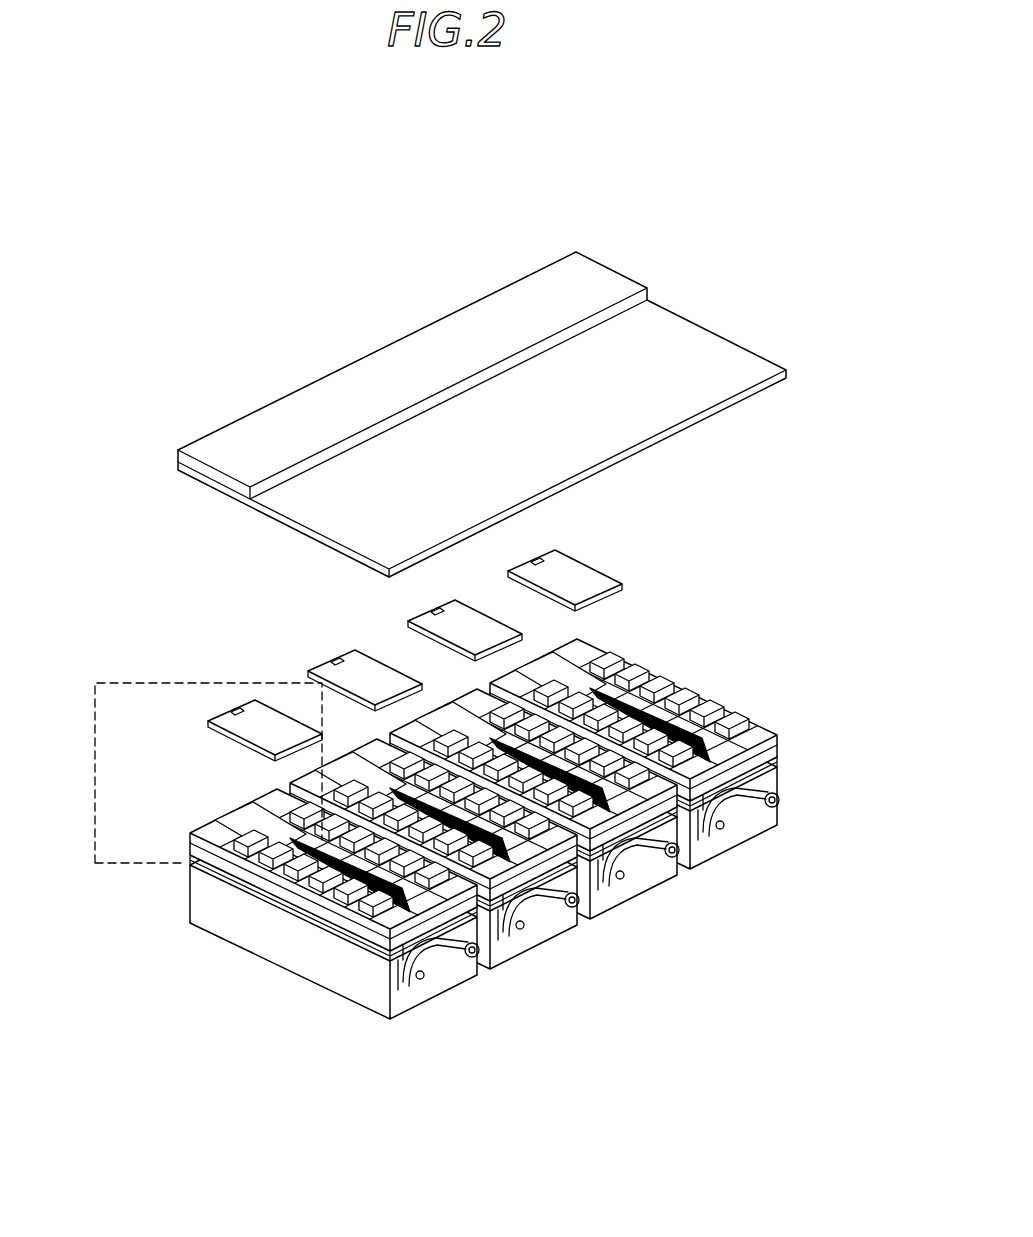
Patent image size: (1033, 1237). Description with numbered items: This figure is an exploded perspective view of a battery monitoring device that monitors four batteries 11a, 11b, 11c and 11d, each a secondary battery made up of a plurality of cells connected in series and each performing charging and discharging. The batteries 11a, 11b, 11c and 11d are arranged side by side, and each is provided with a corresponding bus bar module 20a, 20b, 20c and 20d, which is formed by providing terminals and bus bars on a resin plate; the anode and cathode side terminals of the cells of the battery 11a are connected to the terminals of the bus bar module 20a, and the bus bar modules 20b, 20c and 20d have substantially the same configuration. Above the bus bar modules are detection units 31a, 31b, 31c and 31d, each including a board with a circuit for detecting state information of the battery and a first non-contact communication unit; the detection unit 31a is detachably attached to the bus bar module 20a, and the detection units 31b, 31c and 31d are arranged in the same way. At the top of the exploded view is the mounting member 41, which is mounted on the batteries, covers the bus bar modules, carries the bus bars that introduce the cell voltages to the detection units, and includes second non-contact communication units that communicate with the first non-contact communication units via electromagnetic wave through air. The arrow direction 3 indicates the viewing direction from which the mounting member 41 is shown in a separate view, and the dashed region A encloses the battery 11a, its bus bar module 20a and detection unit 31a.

The arrow direction 3 is at (482, 419).
The mounting member 41 is at (682, 321).
The battery 11a is at (437, 998).
The battery 11b is at (533, 950).
The battery 11c is at (630, 903).
The battery 11d is at (730, 855).
The bus bar module 20a is at (200, 833).
The bus bar module 20b is at (367, 747).
The bus bar module 20c is at (470, 695).
The bus bar module 20d is at (697, 705).
The detection unit 31a is at (242, 735).
The detection unit 31b is at (342, 650).
The detection unit 31c is at (467, 622).
The detection unit 31d is at (575, 570).
The region A is at (125, 868).